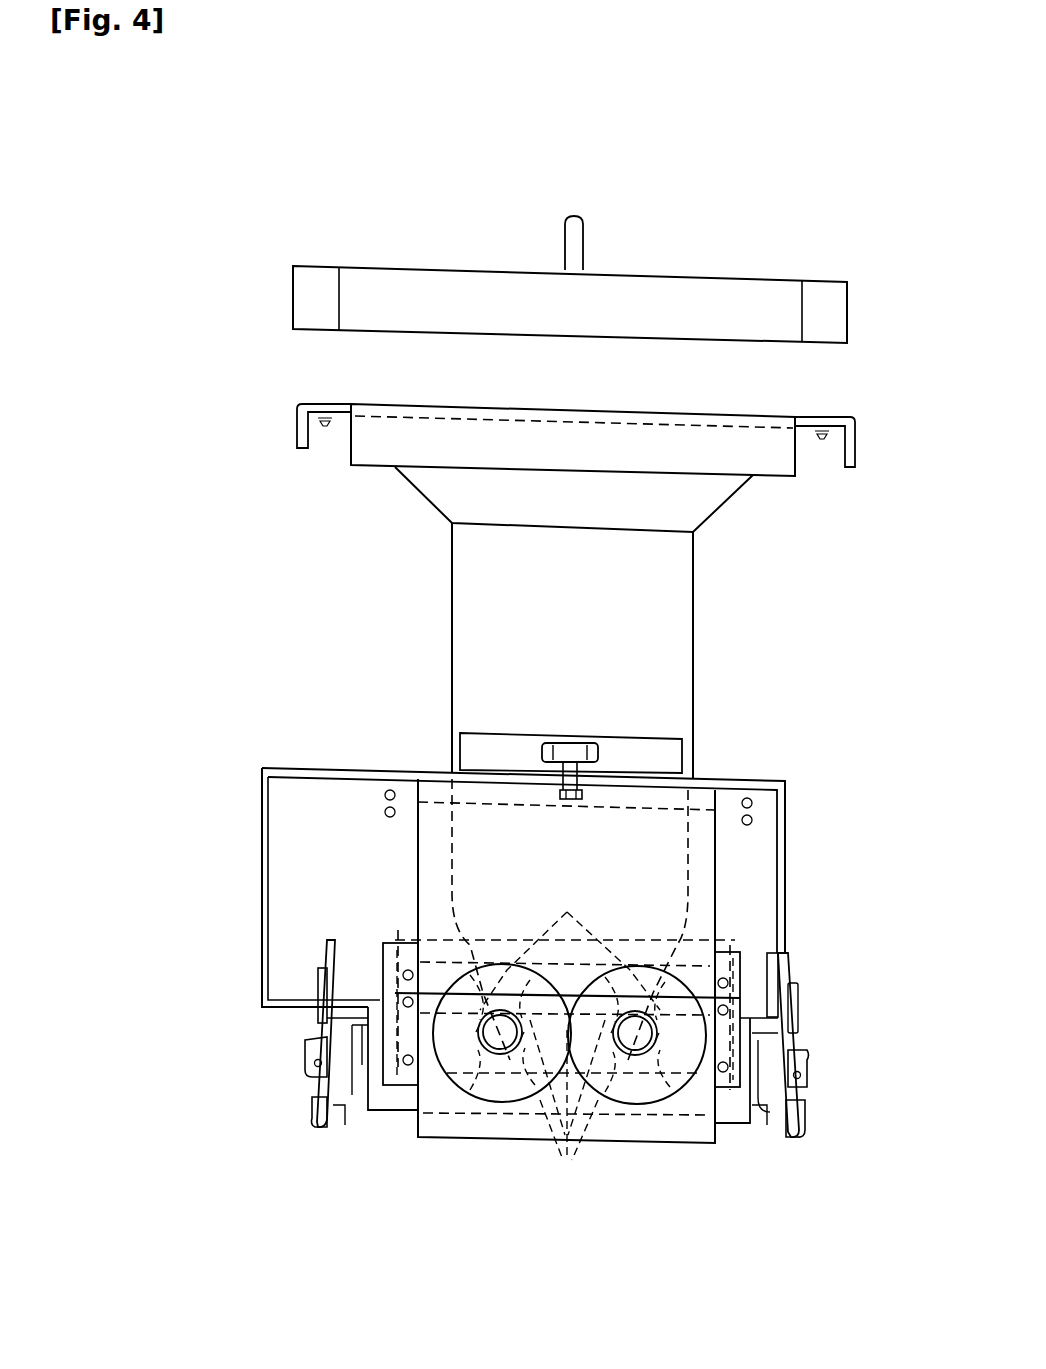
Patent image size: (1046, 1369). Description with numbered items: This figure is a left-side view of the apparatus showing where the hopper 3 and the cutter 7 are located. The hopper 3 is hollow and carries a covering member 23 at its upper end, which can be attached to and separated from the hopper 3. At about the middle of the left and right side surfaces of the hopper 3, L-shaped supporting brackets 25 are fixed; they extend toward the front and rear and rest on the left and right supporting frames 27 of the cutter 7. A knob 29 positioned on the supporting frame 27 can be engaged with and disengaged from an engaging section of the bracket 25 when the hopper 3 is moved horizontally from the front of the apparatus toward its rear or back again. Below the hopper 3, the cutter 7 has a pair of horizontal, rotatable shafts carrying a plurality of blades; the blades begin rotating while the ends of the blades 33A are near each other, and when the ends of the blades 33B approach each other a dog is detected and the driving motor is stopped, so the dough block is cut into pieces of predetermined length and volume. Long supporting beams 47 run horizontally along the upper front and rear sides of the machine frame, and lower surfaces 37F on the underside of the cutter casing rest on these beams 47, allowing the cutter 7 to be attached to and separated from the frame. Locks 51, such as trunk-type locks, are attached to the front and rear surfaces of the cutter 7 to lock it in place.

The covering member 23 is at (683, 285).
The hopper 3 is at (677, 623).
The supporting bracket 25 is at (493, 742).
The knob 29 is at (572, 735).
The supporting frame 27 is at (322, 793).
The cutter 7 is at (497, 1147).
The blade 33B is at (567, 912).
The blade 33A is at (565, 1142).
The lower surface 37F is at (362, 1060).
The lock 51 is at (295, 1048).
The supporting beam 47 is at (343, 1107).